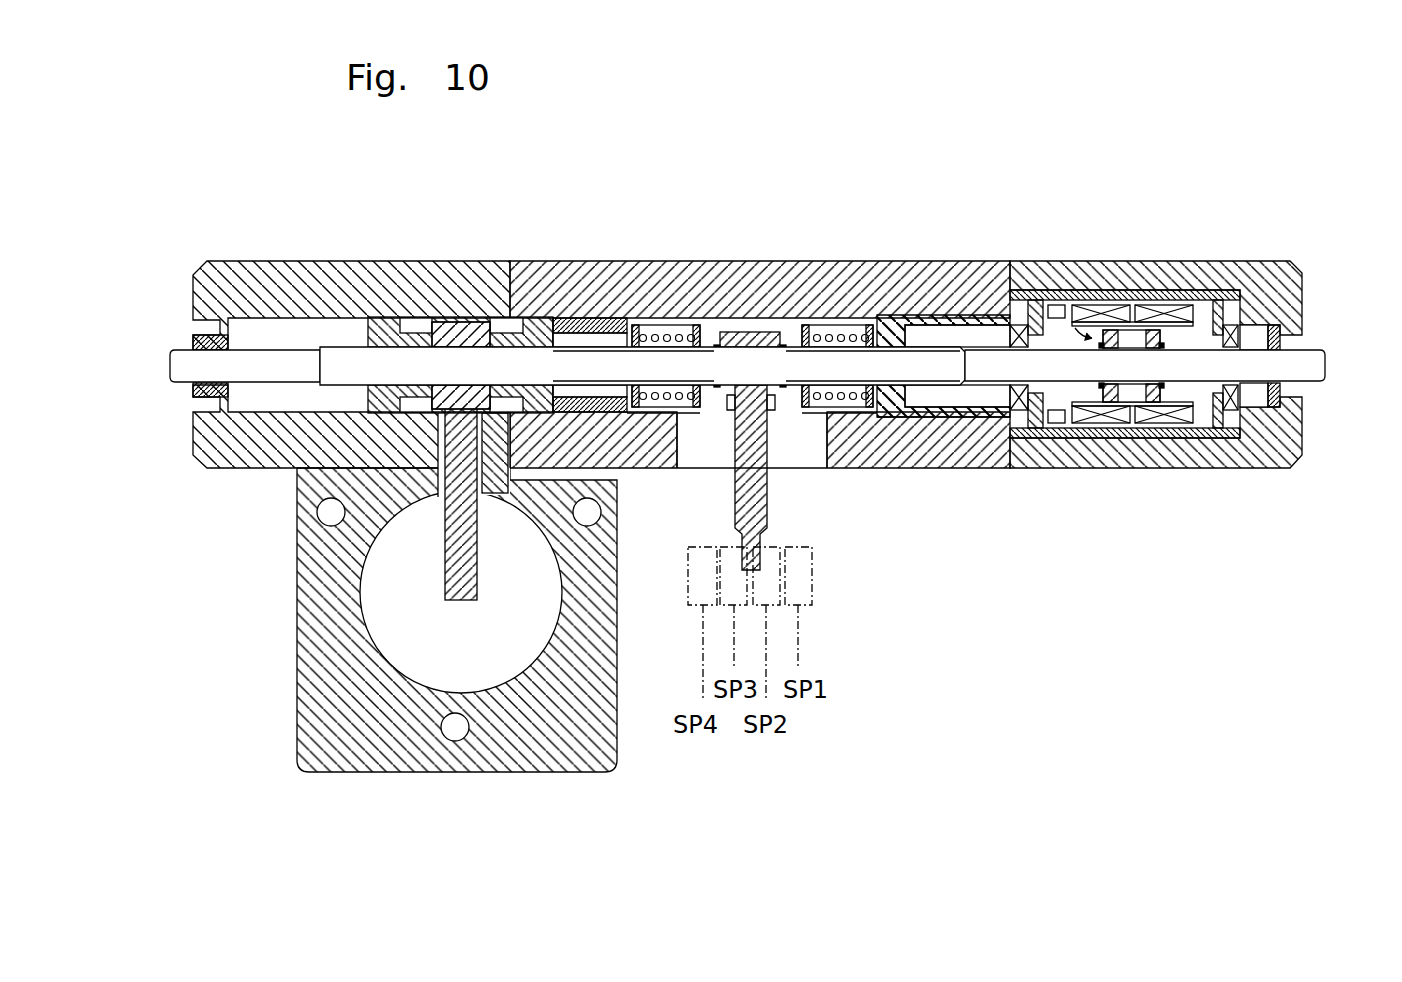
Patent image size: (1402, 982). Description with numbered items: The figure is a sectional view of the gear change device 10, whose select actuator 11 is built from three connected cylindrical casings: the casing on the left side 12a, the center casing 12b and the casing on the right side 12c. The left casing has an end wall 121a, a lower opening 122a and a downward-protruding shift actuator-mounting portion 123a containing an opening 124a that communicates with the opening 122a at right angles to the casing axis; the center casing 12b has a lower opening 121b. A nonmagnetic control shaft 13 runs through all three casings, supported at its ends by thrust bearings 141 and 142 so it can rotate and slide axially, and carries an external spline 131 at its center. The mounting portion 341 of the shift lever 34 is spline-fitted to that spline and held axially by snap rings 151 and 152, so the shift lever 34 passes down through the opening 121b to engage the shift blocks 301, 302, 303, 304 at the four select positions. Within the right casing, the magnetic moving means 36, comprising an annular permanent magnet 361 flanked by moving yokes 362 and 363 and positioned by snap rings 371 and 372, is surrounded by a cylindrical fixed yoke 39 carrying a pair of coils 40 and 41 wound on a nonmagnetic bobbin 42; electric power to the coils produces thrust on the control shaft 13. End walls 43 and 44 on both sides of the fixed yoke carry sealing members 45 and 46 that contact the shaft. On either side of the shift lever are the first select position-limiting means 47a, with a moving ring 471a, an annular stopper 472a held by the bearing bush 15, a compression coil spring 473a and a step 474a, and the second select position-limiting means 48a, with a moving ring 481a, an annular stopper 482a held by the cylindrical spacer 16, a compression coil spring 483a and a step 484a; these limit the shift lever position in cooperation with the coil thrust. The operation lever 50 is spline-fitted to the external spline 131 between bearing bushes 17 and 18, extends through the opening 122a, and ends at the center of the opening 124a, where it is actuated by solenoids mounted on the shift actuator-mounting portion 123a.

The gear change device 10 is at (982, 140).
The select actuator 11 is at (758, 150).
The casing on the left side 12a is at (274, 262).
The center casing 12b is at (795, 325).
The casing on the right side 12c is at (1170, 262).
The control shaft 13 is at (988, 350).
The bearing bush 15 is at (965, 320).
The cylindrical spacer 16 is at (598, 316).
The bearing bush 17 is at (548, 316).
The bearing bush 18 is at (372, 300).
The shift lever 34 is at (733, 512).
The magnetic moving means 36 is at (1075, 310).
The fixed yoke 39 is at (1030, 322).
The coil 40 is at (1185, 322).
The coil 41 is at (1110, 313).
The bobbin 42 is at (1135, 340).
The end wall 43 is at (1240, 322).
The end wall 44 is at (1020, 318).
The sealing member 45 is at (1255, 420).
The sealing member 46 is at (995, 400).
The first select position-limiting means 47a is at (873, 320).
The second select position-limiting means 48a is at (663, 320).
The operation lever 50 is at (452, 572).
The end wall 121a is at (195, 318).
The opening 121b is at (812, 455).
The opening 122a is at (440, 458).
The shift actuator-mounting portion 123a is at (388, 745).
The opening 124a is at (485, 662).
The external spline 131 is at (580, 313).
The thrust bearing 141 is at (193, 380).
The thrust bearing 142 is at (1304, 341).
The snap ring 151 is at (783, 392).
The snap ring 152 is at (716, 392).
The shift block 301 is at (812, 593).
The shift block 302 is at (775, 605).
The shift block 303 is at (710, 568).
The shift block 304 is at (690, 592).
The mounting portion 341 is at (760, 333).
The permanent magnet 361 is at (1128, 430).
The moving yoke 362 is at (1150, 405).
The moving yoke 363 is at (1100, 410).
The snap ring 371 is at (1180, 422).
The snap ring 372 is at (1085, 422).
The moving ring 471a is at (847, 314).
The annular stopper 472a is at (928, 315).
The compression coil spring 473a is at (855, 417).
The step 474a is at (800, 322).
The moving ring 481a is at (700, 323).
The annular stopper 482a is at (642, 318).
The compression coil spring 483a is at (662, 417).
The step 484a is at (706, 310).